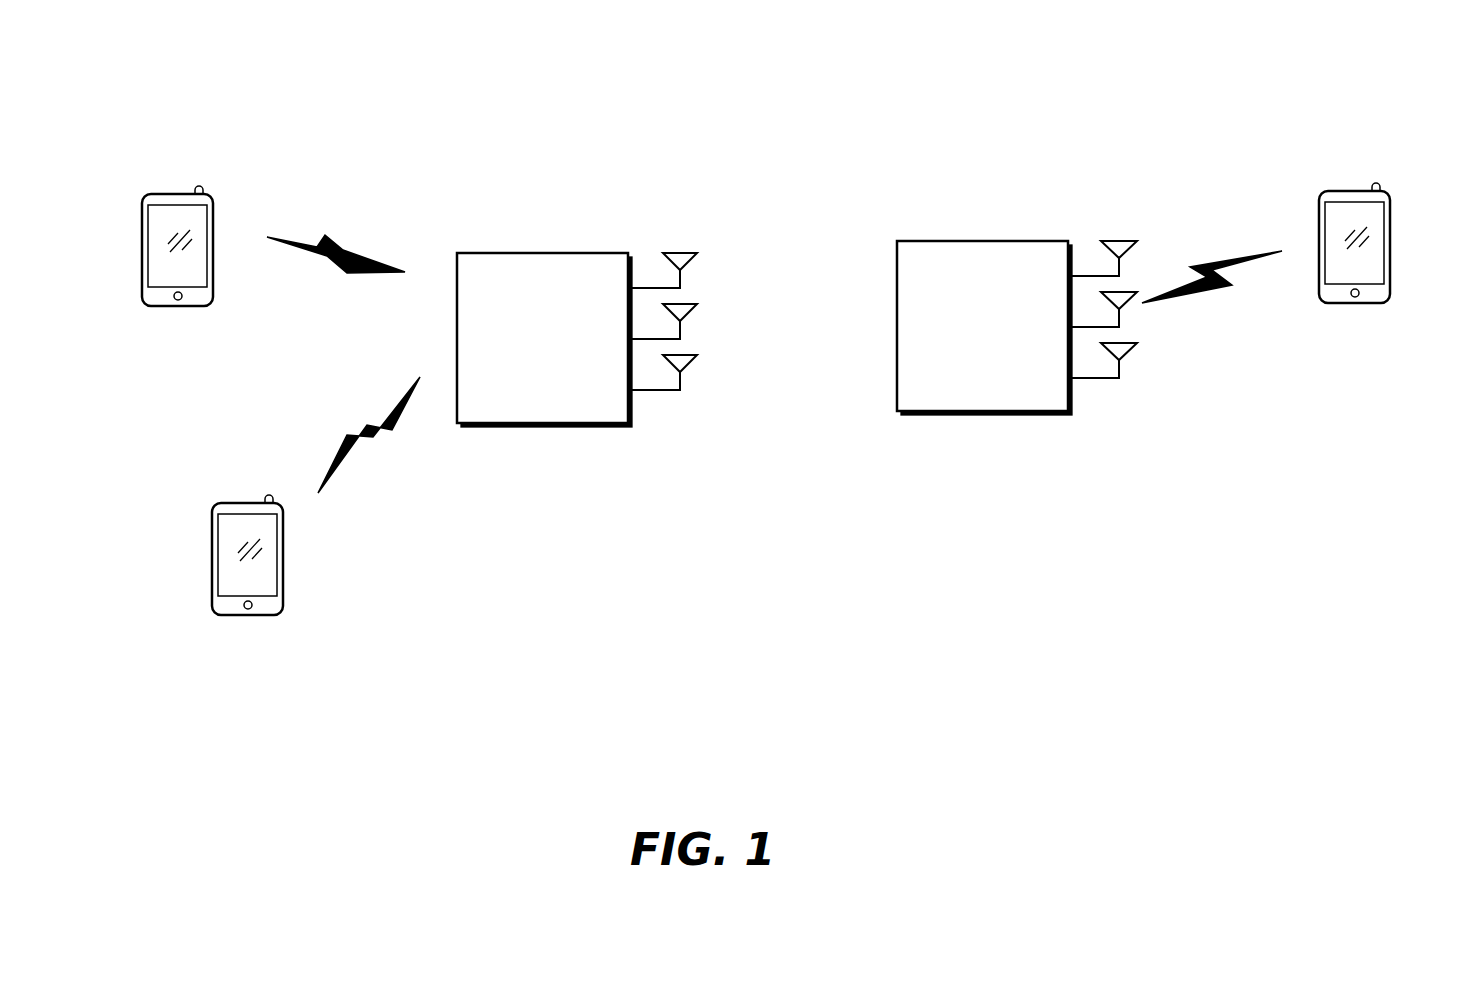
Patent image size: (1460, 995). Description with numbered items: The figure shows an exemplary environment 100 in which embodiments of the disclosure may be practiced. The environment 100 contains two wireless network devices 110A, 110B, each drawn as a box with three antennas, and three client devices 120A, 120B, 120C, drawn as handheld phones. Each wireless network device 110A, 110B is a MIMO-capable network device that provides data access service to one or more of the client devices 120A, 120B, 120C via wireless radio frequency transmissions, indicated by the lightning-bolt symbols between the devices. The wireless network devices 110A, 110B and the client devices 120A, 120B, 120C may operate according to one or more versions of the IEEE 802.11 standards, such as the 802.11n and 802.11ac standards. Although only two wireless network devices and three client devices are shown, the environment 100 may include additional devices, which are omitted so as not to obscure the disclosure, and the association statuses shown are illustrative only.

The environment 100 is at (1151, 44).
The wireless network device 110A is at (592, 253).
The wireless network device 110B is at (1032, 241).
The client device 120A is at (163, 194).
The client device 120B is at (233, 503).
The client device 120C is at (1390, 233).